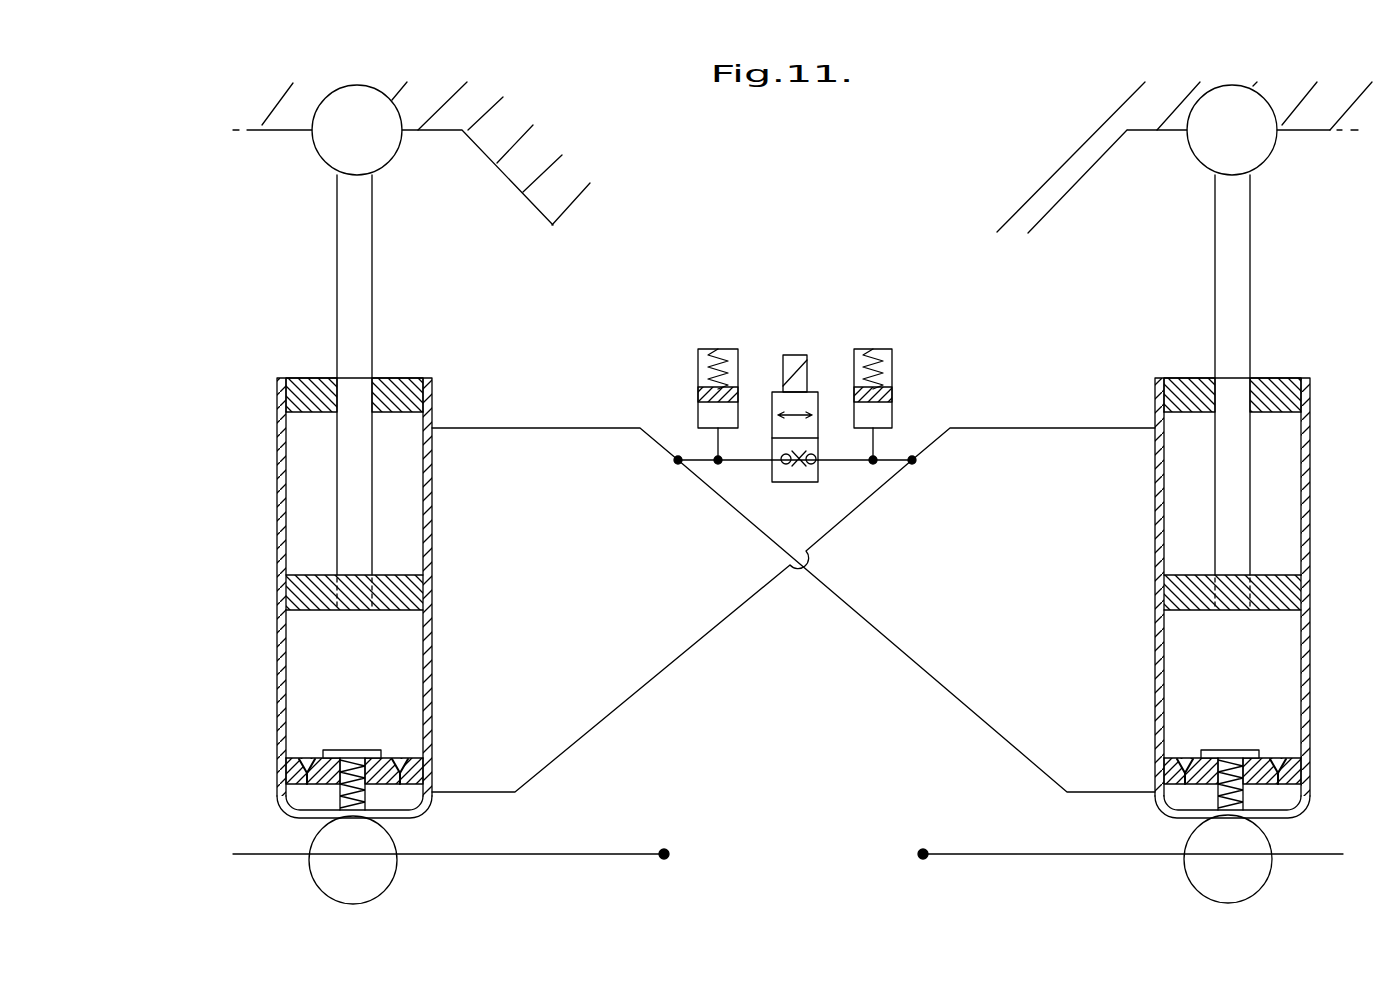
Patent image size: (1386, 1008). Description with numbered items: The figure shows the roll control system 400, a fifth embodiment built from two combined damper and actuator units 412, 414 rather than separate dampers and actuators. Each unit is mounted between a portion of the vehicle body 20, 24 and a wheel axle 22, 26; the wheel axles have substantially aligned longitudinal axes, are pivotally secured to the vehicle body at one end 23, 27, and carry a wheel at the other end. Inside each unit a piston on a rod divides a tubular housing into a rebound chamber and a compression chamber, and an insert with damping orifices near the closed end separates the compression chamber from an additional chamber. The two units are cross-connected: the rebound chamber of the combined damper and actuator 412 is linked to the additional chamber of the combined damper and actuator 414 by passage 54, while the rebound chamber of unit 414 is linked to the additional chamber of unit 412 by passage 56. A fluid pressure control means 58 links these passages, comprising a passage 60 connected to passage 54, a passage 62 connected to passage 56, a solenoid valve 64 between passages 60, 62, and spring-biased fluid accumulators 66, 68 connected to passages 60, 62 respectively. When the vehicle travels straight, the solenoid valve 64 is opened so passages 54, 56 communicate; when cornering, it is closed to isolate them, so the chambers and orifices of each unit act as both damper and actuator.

The portion of the vehicle body 20 is at (265, 132).
The portion of the vehicle body 24 is at (1332, 132).
The first wheel axle 22 is at (572, 856).
The pivot end of first wheel axle 23 is at (670, 860).
The second wheel axle 26 is at (980, 860).
The pivot end of second wheel axle 27 is at (920, 858).
The passage 54 is at (876, 633).
The passage 56 is at (708, 633).
The fluid pressure control means 58 is at (784, 378).
The passage 60 is at (737, 462).
The passage 62 is at (858, 462).
The solenoid valve 64 is at (793, 353).
The fluid accumulator 66 is at (712, 350).
The fluid accumulator 68 is at (888, 347).
The roll control system 400 is at (834, 726).
The combined damper and actuator 412 is at (349, 509).
The combined damper and actuator 414 is at (1230, 509).